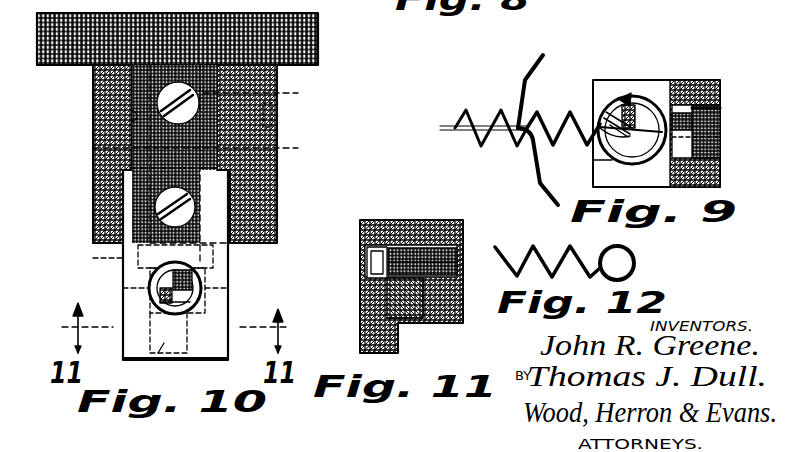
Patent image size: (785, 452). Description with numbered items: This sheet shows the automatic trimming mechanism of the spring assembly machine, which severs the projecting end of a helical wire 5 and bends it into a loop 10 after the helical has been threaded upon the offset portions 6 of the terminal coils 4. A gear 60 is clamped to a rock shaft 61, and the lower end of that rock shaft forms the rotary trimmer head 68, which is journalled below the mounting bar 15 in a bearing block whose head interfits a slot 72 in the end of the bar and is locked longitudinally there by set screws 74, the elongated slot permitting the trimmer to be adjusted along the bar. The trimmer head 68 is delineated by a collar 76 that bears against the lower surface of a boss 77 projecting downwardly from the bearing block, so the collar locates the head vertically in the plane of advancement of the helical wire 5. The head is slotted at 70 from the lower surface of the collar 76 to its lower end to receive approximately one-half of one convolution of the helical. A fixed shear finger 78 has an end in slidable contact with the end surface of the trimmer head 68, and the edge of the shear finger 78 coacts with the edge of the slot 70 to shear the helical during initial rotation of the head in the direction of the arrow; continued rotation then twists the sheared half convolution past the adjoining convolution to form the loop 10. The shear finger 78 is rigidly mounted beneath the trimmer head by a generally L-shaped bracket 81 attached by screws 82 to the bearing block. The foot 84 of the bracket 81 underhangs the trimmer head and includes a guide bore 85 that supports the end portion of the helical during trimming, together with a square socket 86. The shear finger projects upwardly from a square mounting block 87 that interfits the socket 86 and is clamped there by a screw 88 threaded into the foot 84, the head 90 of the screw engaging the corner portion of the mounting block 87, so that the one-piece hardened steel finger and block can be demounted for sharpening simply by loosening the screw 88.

In FIG. 9, the terminal coil 4 is at (527, 67).
In FIG. 9, the helical wire 5 is at (460, 125).
In FIG. 12, the helical wire 5 is at (505, 248).
In FIG. 9, the offset portion 6 is at (458, 140).
In FIG. 9, the loop 10 is at (620, 137).
In FIG. 12, the loop 10 is at (636, 263).
In FIG. 10, the mounting bar 15 is at (100, 149).
In FIG. 10, the gear 60 is at (297, 43).
In FIG. 10, the rock shaft 61 is at (263, 93).
In FIG. 10, the trimmer head 68 is at (222, 279).
In FIG. 9, the trimmer head 68 is at (630, 96).
In FIG. 9, the slot 70 is at (655, 108).
In FIG. 10, the slot 72 is at (130, 113).
In FIG. 10, the set screw 74 is at (207, 135).
In FIG. 10, the collar 76 is at (95, 259).
In FIG. 9, the collar 76 is at (613, 161).
In FIG. 9, the boss 77 is at (628, 88).
In FIG. 10, the shear finger 78 is at (172, 302).
In FIG. 9, the shear finger 78 is at (613, 117).
In FIG. 10, the L-shaped bracket 81 is at (203, 340).
In FIG. 10, the screw 82 is at (187, 215).
In FIG. 10, the foot 84 is at (212, 361).
In FIG. 11, the foot 84 is at (367, 333).
In FIG. 9, the guide bore 85 is at (683, 143).
In FIG. 11, the square socket 86 is at (407, 307).
In FIG. 10, the mounting block 87 is at (160, 348).
In FIG. 11, the mounting block 87 is at (420, 305).
In FIG. 11, the clamping screw 88 is at (417, 250).
In FIG. 11, the head 90 is at (377, 260).